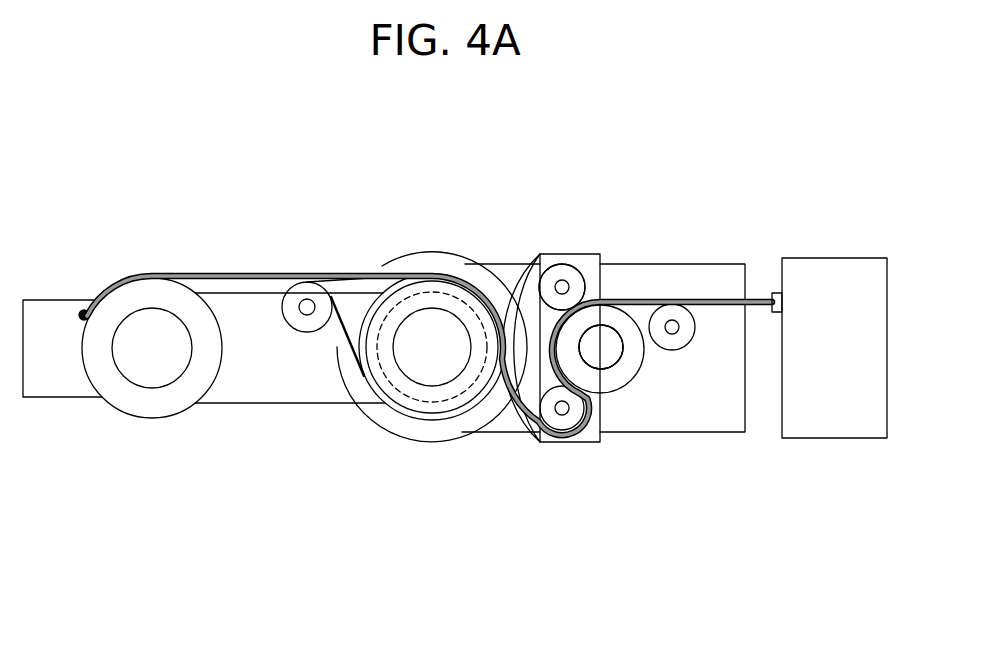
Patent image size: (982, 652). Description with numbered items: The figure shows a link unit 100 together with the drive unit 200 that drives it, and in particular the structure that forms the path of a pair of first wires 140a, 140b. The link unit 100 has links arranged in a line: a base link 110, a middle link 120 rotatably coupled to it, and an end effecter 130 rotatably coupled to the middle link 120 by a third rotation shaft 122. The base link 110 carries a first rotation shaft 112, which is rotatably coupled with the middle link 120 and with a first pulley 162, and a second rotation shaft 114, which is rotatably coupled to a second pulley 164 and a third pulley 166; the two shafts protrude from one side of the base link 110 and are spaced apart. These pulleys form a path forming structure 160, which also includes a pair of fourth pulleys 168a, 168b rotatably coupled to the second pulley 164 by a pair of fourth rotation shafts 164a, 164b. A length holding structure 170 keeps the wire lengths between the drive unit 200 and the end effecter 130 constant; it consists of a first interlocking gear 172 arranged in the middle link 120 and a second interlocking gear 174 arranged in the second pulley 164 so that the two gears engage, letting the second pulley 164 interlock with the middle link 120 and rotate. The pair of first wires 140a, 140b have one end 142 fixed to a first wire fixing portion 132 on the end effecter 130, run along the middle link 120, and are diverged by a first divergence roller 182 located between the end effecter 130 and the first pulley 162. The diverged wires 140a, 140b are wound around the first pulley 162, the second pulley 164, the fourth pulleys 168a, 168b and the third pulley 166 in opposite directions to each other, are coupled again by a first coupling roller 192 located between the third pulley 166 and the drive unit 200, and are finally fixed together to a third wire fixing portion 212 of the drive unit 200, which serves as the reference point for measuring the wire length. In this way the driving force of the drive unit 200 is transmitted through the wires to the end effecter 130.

The link unit 100 is at (378, 217).
The base link 110 is at (732, 420).
The first rotation shaft 112 is at (413, 365).
The second rotation shaft 114 is at (620, 332).
The middle link 120 is at (233, 393).
The third rotation shaft 122 is at (153, 372).
The end effecter 130 is at (67, 388).
The first wire fixing portion 132 is at (82, 310).
The first wire 140a is at (282, 273).
The first wire 140b is at (347, 347).
The one end of the first wire 142 is at (90, 307).
The path forming structure 160 is at (662, 553).
The first pulley 162 is at (448, 408).
The second pulley 164 is at (593, 367).
The fourth rotation shaft 164a is at (563, 285).
The fourth rotation shaft 164b is at (612, 340).
The third pulley 166 is at (627, 372).
The fourth pulley 168a is at (552, 298).
The fourth pulley 168b is at (560, 428).
The length holding structure 170 is at (510, 187).
The first interlocking gear 172 is at (446, 292).
The second interlocking gear 174 is at (517, 280).
The first divergence roller 182 is at (290, 318).
The first coupling roller 192 is at (671, 345).
The drive unit 200 is at (833, 246).
The third wire fixing portion 212 is at (775, 293).